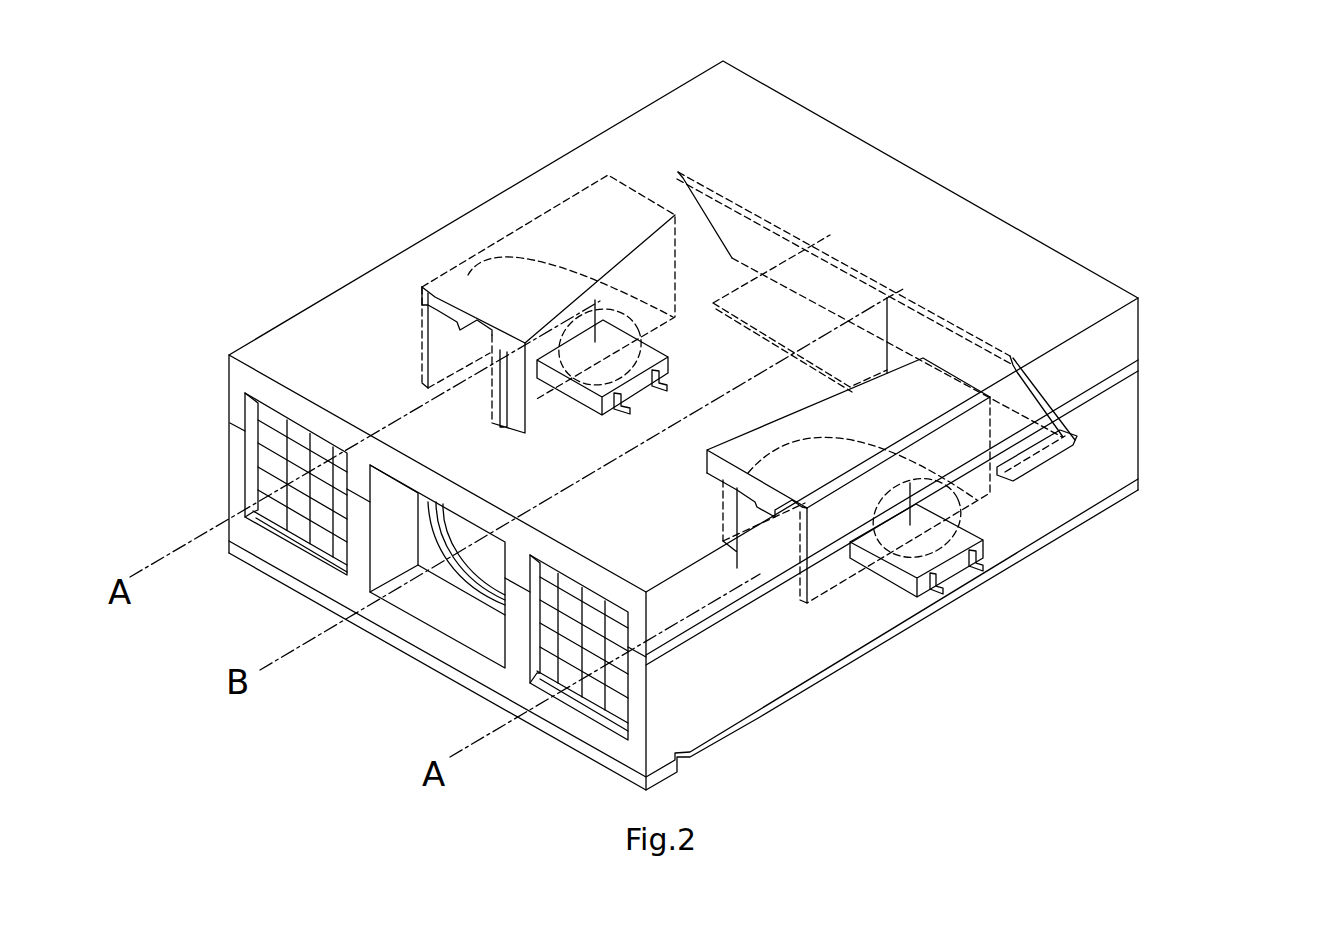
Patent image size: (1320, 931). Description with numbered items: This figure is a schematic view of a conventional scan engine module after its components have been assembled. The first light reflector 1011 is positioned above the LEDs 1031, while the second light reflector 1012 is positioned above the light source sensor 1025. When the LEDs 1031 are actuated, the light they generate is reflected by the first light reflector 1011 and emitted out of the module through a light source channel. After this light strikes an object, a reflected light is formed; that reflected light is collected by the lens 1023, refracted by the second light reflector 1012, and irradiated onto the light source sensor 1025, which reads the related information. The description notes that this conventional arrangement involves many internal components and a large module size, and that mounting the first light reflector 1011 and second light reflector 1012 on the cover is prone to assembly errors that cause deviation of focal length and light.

The first light reflector 1011 is at (843, 468).
The second light reflector 1012 is at (830, 278).
The lens 1023 is at (470, 568).
The light source sensor 1025 is at (1040, 452).
The LEDs 1031 is at (980, 560).